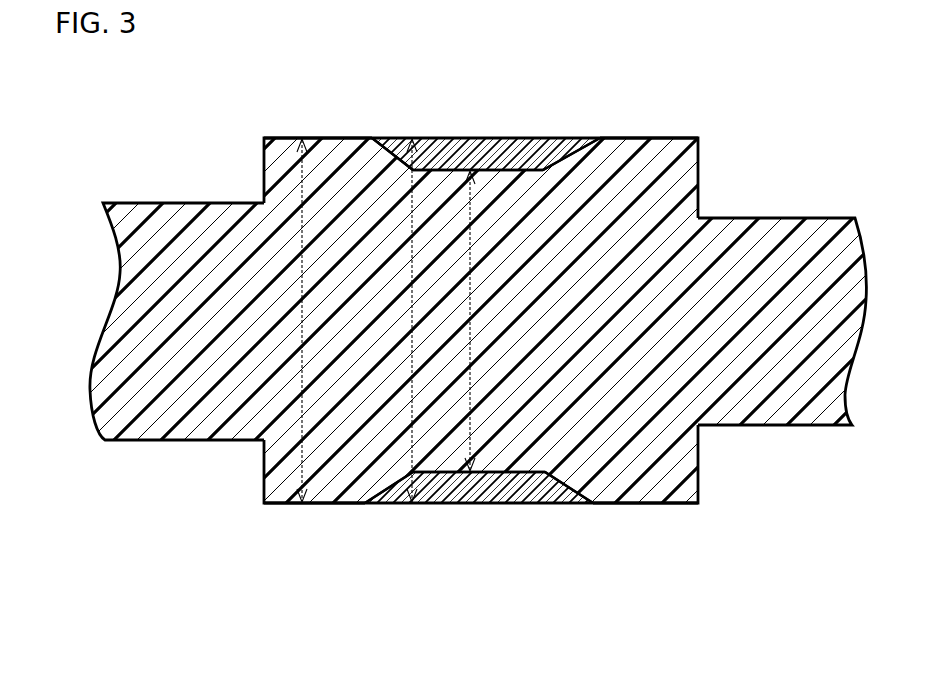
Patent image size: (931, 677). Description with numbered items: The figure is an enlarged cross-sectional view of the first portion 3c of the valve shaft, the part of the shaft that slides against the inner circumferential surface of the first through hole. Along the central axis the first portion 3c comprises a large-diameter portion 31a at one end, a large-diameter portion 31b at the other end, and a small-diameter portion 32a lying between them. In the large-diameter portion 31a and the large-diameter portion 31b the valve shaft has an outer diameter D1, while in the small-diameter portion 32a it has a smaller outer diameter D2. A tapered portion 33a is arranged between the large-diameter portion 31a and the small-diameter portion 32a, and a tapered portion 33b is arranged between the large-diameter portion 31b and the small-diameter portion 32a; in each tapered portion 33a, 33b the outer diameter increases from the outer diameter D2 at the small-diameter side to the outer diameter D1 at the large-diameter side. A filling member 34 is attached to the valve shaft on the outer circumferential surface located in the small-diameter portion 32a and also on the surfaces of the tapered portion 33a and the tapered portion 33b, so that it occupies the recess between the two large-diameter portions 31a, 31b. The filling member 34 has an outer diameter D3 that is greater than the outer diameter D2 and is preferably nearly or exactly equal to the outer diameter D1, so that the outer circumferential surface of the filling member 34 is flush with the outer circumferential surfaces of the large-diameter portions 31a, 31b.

The first portion 3c is at (695, 590).
The large-diameter portion 31a is at (365, 83).
The large-diameter portion 31b is at (695, 83).
The small-diameter portion 32a is at (522, 83).
The tapered portion 33a is at (428, 83).
The tapered portion 33b is at (590, 83).
The filling member 34 is at (540, 156).
The outer diameter D1 is at (321, 320).
The outer diameter D2 is at (491, 321).
The outer diameter D3 is at (432, 320).